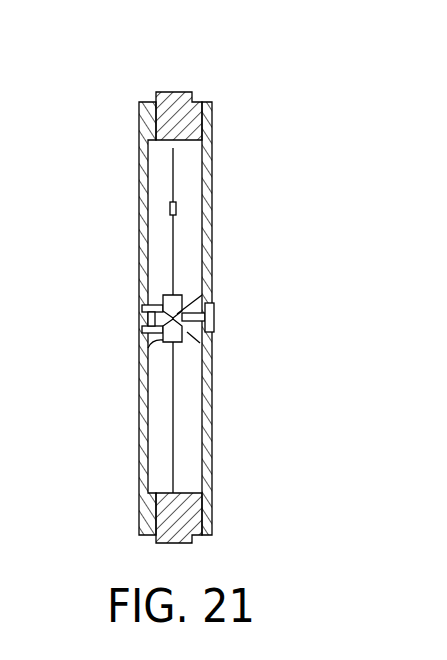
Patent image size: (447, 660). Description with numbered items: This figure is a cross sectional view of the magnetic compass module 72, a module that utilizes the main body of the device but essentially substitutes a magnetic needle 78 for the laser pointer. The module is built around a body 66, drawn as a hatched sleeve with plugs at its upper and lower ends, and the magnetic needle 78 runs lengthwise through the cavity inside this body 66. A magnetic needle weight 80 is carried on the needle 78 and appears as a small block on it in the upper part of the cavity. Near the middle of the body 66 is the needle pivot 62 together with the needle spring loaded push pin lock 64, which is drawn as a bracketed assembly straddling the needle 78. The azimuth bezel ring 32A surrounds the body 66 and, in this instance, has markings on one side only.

The azimuth bezel ring 32A is at (138, 129).
The body 66 is at (213, 117).
The magnetic compass module 72 is at (179, 92).
The needle pivot 62 is at (140, 367).
The magnetic needle 78 is at (173, 253).
The magnetic needle weight 80 is at (177, 208).
The needle spring loaded push pin lock 64 is at (215, 330).